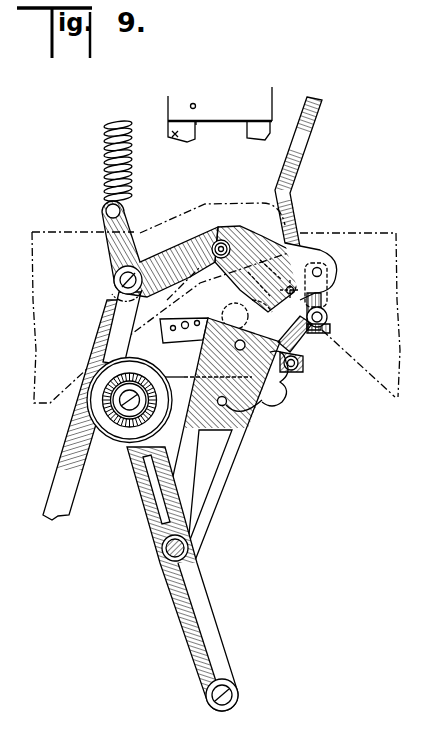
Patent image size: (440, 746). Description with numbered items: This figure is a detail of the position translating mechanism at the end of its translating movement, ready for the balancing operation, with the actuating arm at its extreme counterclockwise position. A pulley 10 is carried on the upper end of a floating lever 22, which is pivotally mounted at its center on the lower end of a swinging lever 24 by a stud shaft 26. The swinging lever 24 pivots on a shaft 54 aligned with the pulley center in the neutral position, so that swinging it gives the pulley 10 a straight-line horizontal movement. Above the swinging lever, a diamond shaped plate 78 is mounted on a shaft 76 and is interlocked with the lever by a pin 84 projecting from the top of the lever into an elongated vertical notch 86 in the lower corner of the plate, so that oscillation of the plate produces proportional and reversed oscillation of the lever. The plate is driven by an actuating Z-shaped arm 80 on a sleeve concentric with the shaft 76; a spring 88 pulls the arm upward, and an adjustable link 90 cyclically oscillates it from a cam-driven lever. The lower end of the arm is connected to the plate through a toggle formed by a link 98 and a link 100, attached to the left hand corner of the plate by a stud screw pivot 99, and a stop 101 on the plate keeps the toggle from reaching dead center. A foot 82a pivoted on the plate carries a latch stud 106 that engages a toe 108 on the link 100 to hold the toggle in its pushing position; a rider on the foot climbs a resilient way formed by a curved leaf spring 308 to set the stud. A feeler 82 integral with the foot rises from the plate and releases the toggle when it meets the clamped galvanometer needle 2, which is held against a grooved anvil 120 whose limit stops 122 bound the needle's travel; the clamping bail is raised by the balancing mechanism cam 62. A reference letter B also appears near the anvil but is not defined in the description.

The needle 2 is at (198, 128).
The pulley 10 is at (113, 438).
The floating lever 22 is at (208, 619).
The swinging lever 24 is at (218, 474).
The stud shaft 26 is at (162, 553).
The shaft 54 is at (228, 406).
The balancing mechanism cam 62 is at (66, 230).
The shaft 76 is at (224, 242).
The diamond shaped plate 78 is at (114, 349).
The actuating Z-shaped arm 80 is at (173, 250).
The feeler 82 is at (292, 183).
The foot 82a is at (288, 386).
The pin 84 is at (220, 319).
The elongated vertical notch 86 is at (262, 282).
The spring 88 is at (105, 146).
The adjustable link 90 is at (70, 440).
The link 98 is at (298, 332).
The stud screw pivot 99 is at (320, 271).
The link 100 is at (327, 297).
The stop 101 is at (293, 251).
The latch stud 106 is at (300, 366).
The toe 108 is at (328, 325).
The anvil 120 is at (168, 97).
The limit stops 122 is at (180, 131).
The curved leaf spring 308 is at (189, 376).
The bracket B is at (218, 114).